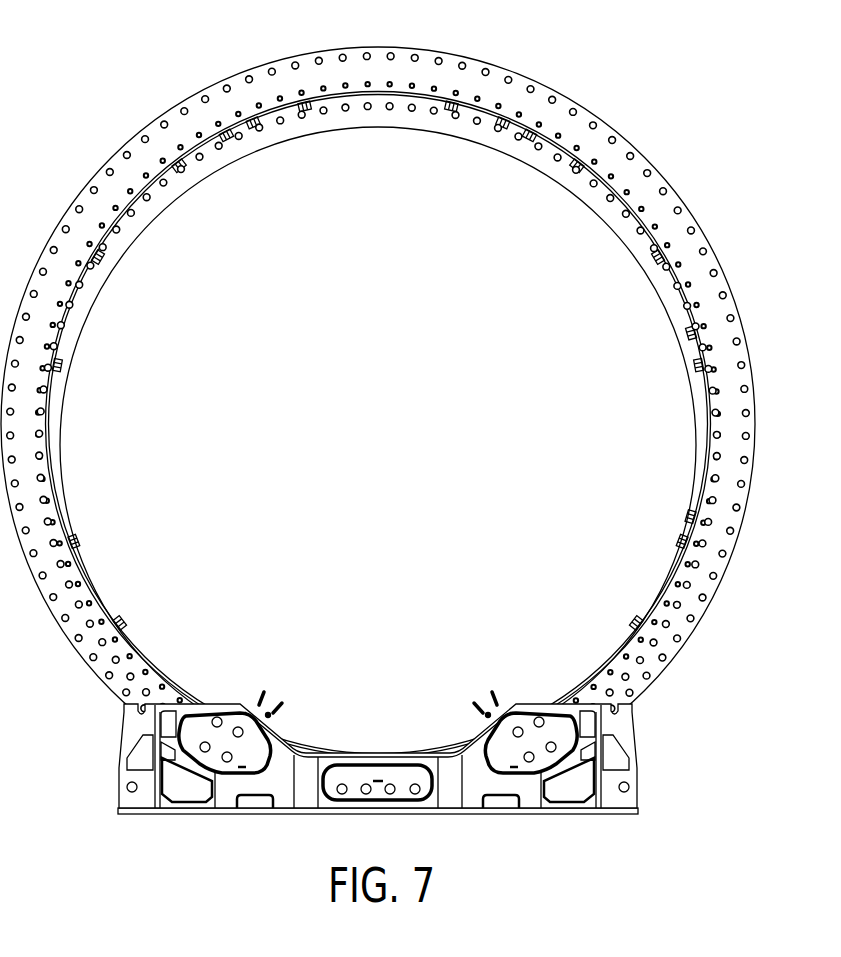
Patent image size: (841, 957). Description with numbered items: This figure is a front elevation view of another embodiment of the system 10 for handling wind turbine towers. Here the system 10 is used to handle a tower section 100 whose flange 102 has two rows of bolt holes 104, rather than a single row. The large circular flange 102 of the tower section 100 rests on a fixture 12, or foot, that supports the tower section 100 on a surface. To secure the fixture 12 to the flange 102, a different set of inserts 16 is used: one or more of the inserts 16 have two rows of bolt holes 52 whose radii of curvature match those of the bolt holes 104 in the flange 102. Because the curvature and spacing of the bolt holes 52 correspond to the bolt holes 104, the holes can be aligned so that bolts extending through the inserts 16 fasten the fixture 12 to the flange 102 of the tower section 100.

The system for handling wind turbine towers 10 is at (337, 774).
The fixture 12 is at (506, 832).
The insert 16 is at (229, 719).
The bolt hole 52 is at (255, 742).
The tower section 100 is at (378, 407).
The flange 102 is at (168, 113).
The bolt holes 104 is at (258, 104).